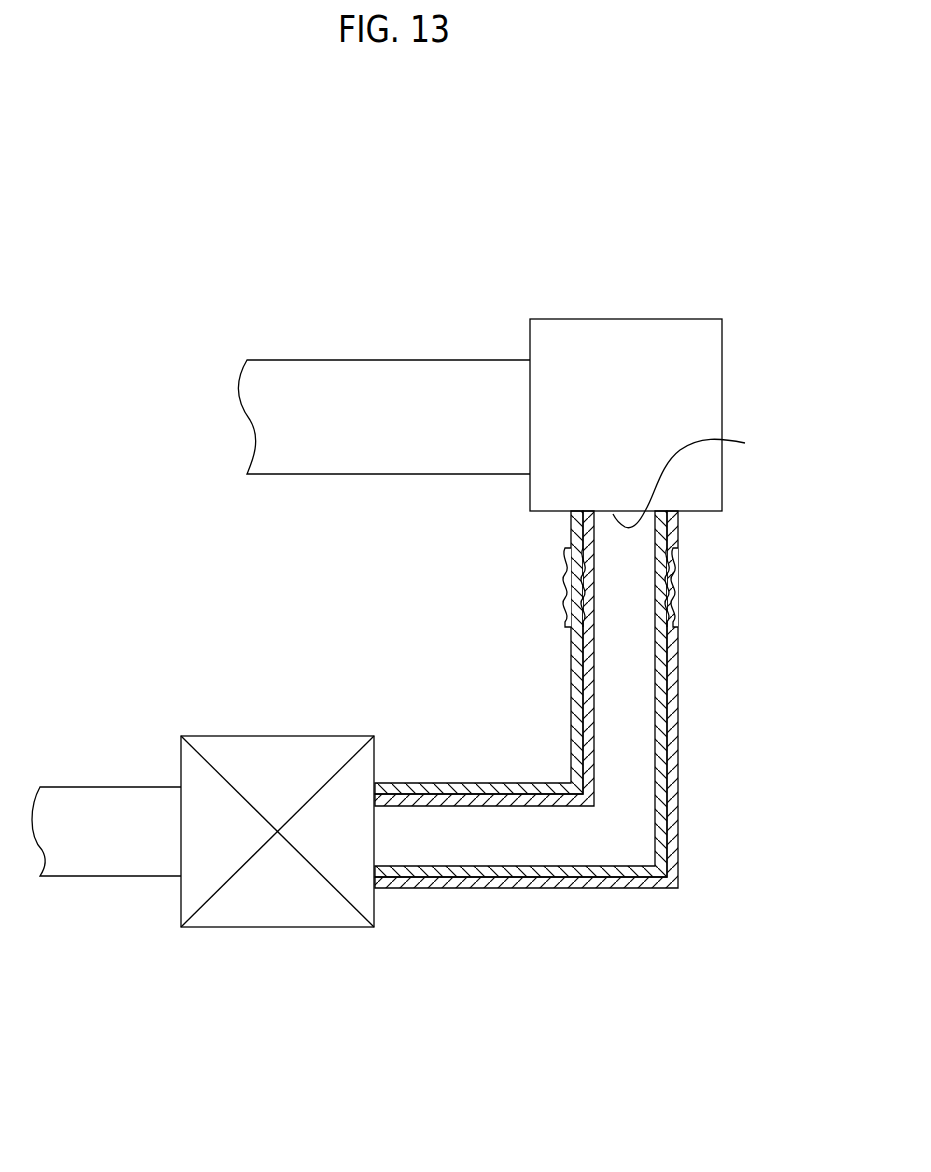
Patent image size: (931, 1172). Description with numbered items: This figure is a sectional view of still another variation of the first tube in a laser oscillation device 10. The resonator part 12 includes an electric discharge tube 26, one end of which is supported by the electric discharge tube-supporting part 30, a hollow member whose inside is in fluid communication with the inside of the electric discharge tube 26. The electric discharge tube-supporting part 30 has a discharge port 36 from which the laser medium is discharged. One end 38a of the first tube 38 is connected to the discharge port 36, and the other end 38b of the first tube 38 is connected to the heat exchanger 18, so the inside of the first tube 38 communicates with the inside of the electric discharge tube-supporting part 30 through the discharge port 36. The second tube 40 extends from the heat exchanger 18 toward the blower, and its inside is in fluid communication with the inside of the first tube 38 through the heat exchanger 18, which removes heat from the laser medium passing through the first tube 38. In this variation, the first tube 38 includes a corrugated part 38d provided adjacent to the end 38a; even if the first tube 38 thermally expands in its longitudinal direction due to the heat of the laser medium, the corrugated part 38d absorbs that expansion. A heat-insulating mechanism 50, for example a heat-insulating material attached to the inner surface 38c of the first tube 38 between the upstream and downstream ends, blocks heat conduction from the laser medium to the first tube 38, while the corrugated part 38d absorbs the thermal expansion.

The laser oscillation device 10 is at (632, 204).
The resonator part 12 is at (421, 324).
The heat exchanger 18 is at (270, 927).
The electric discharge tube 26 is at (340, 360).
The electric discharge tube-supporting part 30 is at (650, 319).
The discharge port 36 is at (691, 478).
The first tube 38 is at (525, 888).
The end of the first tube 38a is at (570, 517).
The other end of the first tube 38b is at (377, 783).
The inner surface of the first tube 38c is at (585, 648).
The corrugated part 38d is at (695, 582).
The second tube 40 is at (102, 876).
The heat-insulating mechanism 50 is at (605, 757).